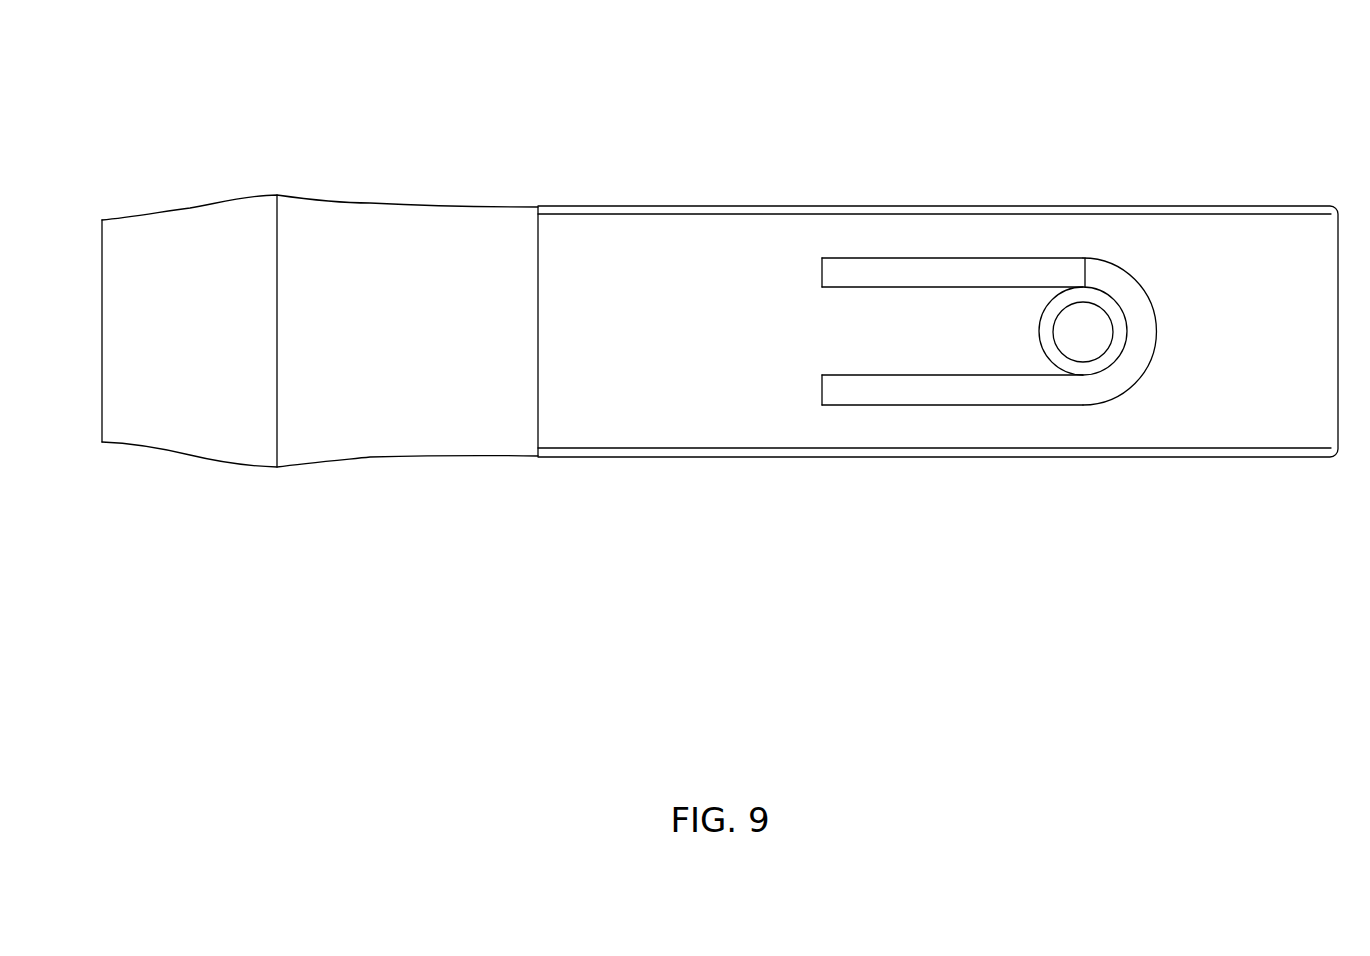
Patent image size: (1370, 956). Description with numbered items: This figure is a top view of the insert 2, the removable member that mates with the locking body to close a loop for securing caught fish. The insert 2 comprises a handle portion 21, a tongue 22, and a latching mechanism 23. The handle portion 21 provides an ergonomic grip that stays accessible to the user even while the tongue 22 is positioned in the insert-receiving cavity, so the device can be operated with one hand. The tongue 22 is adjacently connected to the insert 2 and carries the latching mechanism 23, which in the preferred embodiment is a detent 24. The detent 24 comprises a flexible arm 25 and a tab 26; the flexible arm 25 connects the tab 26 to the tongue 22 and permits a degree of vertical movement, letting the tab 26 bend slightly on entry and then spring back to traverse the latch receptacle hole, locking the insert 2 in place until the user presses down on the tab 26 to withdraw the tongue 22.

The insert 2 is at (649, 77).
The handle portion 21 is at (353, 233).
The tongue 22 is at (675, 433).
The latching mechanism 23 is at (981, 224).
The detent 24 is at (1176, 330).
The flexible arm 25 is at (850, 305).
The tab 26 is at (1097, 343).